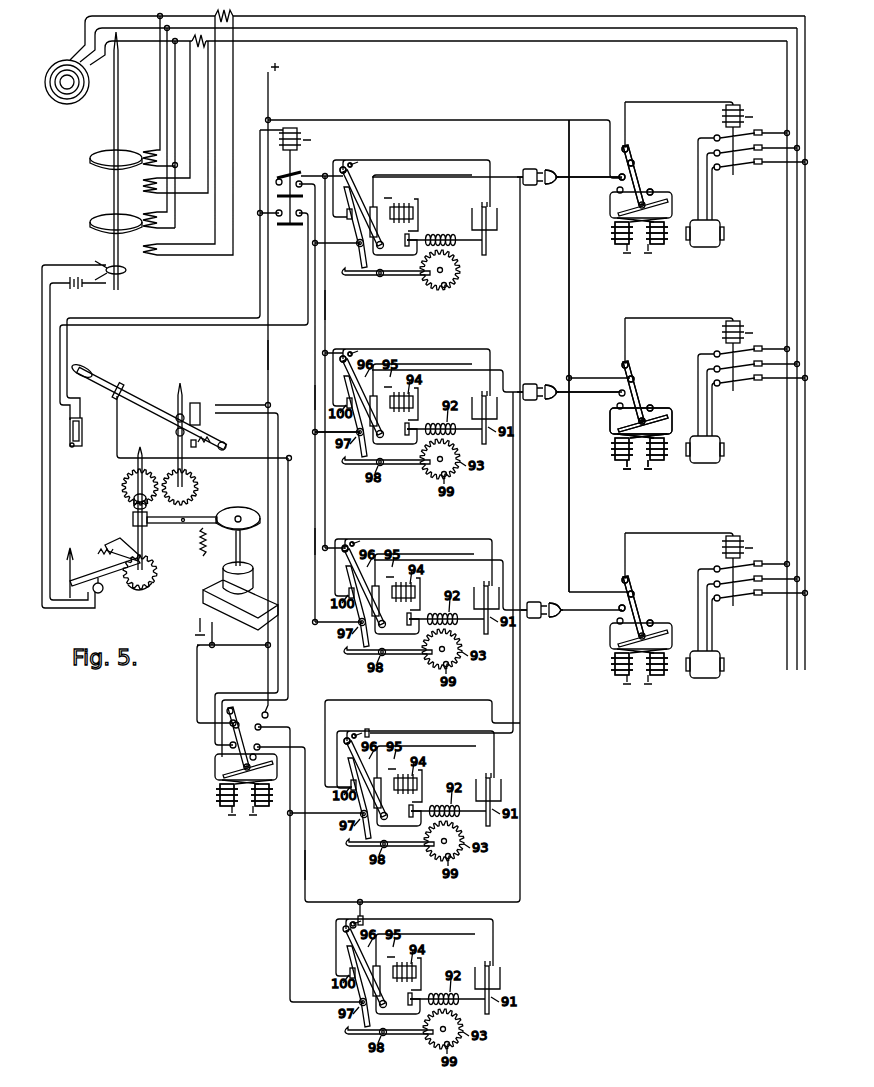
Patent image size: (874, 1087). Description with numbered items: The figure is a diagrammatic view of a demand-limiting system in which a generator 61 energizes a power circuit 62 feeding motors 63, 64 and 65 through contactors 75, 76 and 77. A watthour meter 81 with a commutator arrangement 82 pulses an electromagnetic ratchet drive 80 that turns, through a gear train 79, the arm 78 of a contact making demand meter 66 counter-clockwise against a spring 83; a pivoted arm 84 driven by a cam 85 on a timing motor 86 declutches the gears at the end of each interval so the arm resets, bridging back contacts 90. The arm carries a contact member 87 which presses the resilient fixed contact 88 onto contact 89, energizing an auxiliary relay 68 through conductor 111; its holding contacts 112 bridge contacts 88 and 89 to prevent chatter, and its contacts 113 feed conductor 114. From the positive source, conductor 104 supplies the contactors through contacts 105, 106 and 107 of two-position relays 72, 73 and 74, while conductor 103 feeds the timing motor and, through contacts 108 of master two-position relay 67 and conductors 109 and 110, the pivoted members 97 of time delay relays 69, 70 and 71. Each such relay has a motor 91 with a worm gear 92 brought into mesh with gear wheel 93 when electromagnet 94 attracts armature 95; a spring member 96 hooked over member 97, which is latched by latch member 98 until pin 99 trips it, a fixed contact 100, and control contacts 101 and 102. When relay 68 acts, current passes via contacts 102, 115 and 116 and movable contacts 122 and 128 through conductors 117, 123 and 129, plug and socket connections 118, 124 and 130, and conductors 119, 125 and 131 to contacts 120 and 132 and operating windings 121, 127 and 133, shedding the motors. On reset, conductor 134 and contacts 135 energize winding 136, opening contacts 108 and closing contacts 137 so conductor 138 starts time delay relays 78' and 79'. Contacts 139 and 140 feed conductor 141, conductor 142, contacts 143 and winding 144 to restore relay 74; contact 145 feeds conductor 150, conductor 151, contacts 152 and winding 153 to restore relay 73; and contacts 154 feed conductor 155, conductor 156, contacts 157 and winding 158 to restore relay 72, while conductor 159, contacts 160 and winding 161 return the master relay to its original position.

The generator 61 is at (66, 104).
The electric power circuit 62 is at (416, 41).
The motor 63 is at (718, 233).
The motor 64 is at (718, 449).
The motor 65 is at (718, 664).
The contact making demand meter 66 is at (112, 571).
The master two-position relay 67 is at (246, 780).
The auxiliary relay 68 is at (300, 173).
The time delay relay 69 is at (411, 232).
The time delay relay 70 is at (421, 424).
The time delay relay 71 is at (423, 614).
The two-position relay 72 is at (641, 210).
The two-position relay 73 is at (641, 427).
The two-position relay 74 is at (641, 643).
The contactor 75 is at (716, 150).
The contactor 76 is at (716, 366).
The contactor 77 is at (716, 582).
The arm 78 is at (148, 406).
The time delay relay 78' is at (425, 806).
The gear train 79 is at (160, 444).
The time delay relay 79' is at (424, 1001).
The electro-magnetically operated ratchet drive 80 is at (128, 508).
The watthour meter 81 is at (110, 161).
The commutator arrangement 82 is at (128, 270).
The spring 83 is at (207, 443).
The pivoted arm 84 is at (185, 526).
The cam 85 is at (258, 511).
The timing motor 86 is at (242, 597).
The contact member 87 is at (121, 383).
The fixed contact 88 is at (68, 444).
The fixed contact 89 is at (83, 445).
The back contacts 90 is at (200, 409).
The motor 91 is at (493, 228).
The worm gear 92 is at (443, 227).
The gear wheel 93 is at (452, 270).
The electromagnet 94 is at (403, 207).
The armature 95 is at (393, 211).
The spring member 96 is at (363, 208).
The pivoted member 97 is at (351, 227).
The pivoted latch member 98 is at (386, 282).
The pin 99 is at (446, 297).
The fixed contact 100 is at (340, 220).
The movable contact 101 is at (362, 156).
The fixed contact 102 is at (342, 161).
The conductor 103 is at (268, 357).
The conductor 104 is at (482, 114).
The contacts 105 is at (617, 174).
The contacts 106 is at (617, 391).
The contacts 107 is at (623, 606).
The contacts 108 is at (205, 720).
The conductor 109 is at (315, 540).
The conductor 110 is at (315, 396).
The conductor 111 is at (260, 273).
The holding contacts 112 is at (290, 224).
The contacts 113 is at (297, 175).
The conductor 114 is at (325, 305).
The contact 115 is at (343, 356).
The contact 116 is at (345, 545).
The conductor 117 is at (505, 177).
The plug and socket quick-detachable connection 118 is at (536, 187).
The conductor 119 is at (587, 187).
The contacts 120 is at (608, 167).
The operating winding 121 is at (666, 244).
The movable contact 122 is at (352, 356).
The conductor 123 is at (443, 388).
The plug and socket connection 124 is at (550, 404).
The conductor 125 is at (587, 405).
The operating winding 127 is at (667, 461).
The movable contact 128 is at (354, 542).
The conductor 129 is at (448, 578).
The plug and socket connection 130 is at (545, 616).
The conductor 131 is at (574, 616).
The contacts 132 is at (607, 615).
The operating winding 133 is at (669, 676).
The conductor 134 is at (315, 432).
The contacts 135 is at (213, 750).
The operating winding 136 is at (268, 809).
The contacts 137 is at (283, 714).
The conductor 138 is at (290, 928).
The contact 139 is at (356, 733).
The contact 140 is at (346, 737).
The conductor 141 is at (450, 722).
The conductor 142 is at (563, 608).
The contacts 143 is at (668, 614).
The operating winding 144 is at (612, 666).
The stationary contact 145 is at (368, 737).
The conductor 150 is at (520, 496).
The conductor 151 is at (554, 386).
The contacts 152 is at (667, 402).
The operating winding 153 is at (606, 456).
The contacts 154 is at (340, 921).
The conductor 155 is at (513, 856).
The conductor 156 is at (557, 171).
The contacts 157 is at (666, 187).
The operating winding 158 is at (607, 239).
The conductor 159 is at (305, 865).
The contacts 160 is at (267, 742).
The operating winding 161 is at (217, 805).